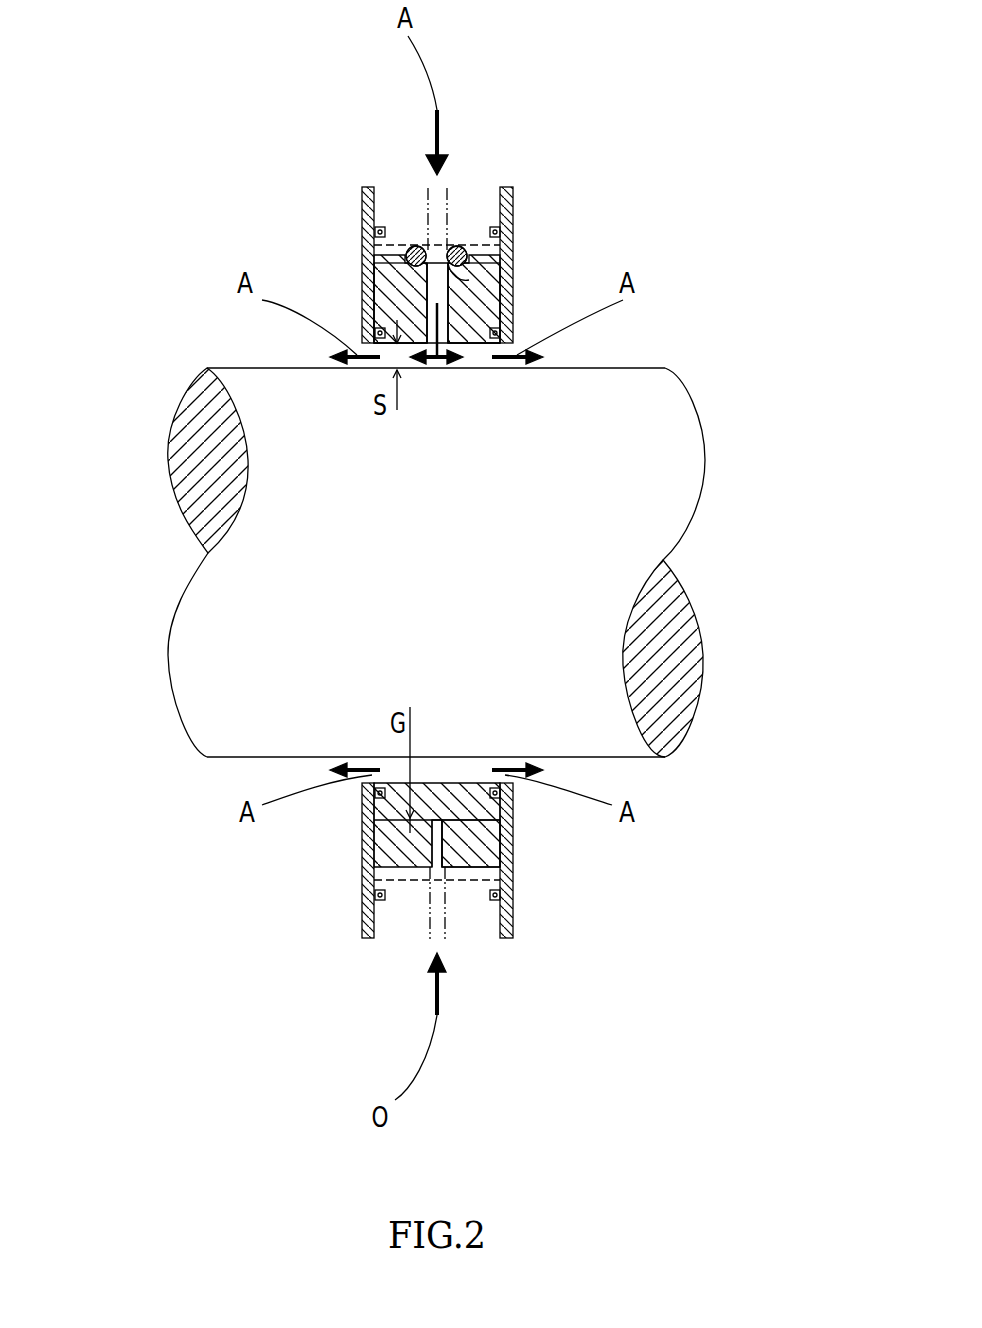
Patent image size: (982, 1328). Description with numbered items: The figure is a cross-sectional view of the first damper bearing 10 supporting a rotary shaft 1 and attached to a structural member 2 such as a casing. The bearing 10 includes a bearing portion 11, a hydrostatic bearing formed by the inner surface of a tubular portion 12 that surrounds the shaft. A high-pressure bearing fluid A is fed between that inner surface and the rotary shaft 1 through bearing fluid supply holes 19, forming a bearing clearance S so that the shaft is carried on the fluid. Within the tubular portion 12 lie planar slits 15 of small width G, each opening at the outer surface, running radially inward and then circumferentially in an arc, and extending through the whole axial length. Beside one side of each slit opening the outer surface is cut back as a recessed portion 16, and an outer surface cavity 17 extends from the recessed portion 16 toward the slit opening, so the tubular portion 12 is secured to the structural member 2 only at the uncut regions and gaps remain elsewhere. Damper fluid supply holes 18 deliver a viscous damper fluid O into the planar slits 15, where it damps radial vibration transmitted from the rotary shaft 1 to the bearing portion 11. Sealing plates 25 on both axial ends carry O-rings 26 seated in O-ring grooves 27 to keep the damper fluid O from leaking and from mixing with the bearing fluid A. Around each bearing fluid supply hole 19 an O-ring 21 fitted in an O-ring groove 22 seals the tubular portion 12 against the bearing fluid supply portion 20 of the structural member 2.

The rotary shaft 1 is at (232, 660).
The structural member 2 is at (393, 212).
The first damper bearing 10 is at (683, 210).
The bearing portion 11 is at (548, 351).
The tubular portion 12 is at (392, 296).
The planar slit 15 is at (468, 827).
The recessed portion 16 is at (407, 249).
The outer surface cavity 17 is at (462, 868).
The damper fluid supply hole 18 is at (428, 846).
The bearing fluid supply hole 19 is at (513, 282).
The bearing fluid supply portion 20 is at (448, 200).
The O-ring 21 is at (465, 246).
The O-ring groove 22 is at (513, 263).
The sealing plate 25 is at (362, 203).
The O-ring 26 is at (418, 586).
The O-ring groove 27 is at (376, 232).